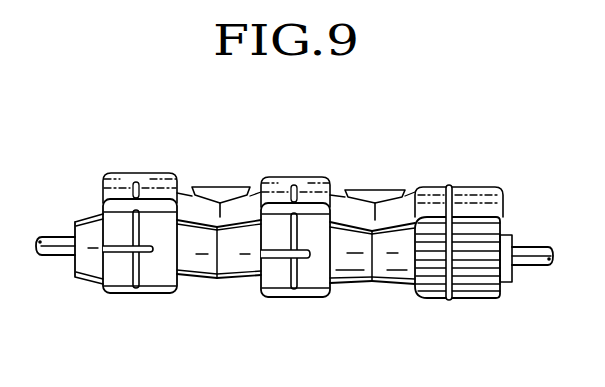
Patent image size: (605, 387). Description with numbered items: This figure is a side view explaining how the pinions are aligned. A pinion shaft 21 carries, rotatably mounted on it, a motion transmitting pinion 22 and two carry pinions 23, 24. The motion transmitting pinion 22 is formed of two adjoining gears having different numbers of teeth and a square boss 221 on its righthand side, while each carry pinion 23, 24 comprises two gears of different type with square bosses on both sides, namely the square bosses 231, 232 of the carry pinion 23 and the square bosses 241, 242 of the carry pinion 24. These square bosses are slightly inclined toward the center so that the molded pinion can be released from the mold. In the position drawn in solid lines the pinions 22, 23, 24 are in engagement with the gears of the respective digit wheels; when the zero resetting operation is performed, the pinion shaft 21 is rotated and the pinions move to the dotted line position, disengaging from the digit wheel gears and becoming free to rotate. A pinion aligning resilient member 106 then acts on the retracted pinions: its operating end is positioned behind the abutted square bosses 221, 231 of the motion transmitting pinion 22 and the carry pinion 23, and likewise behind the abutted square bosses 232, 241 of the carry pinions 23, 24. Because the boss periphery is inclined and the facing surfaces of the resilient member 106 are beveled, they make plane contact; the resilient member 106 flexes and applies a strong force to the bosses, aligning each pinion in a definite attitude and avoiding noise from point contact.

The pinion shaft 21 is at (539, 249).
The motion transmitting pinion 22 is at (468, 300).
The square boss 221 is at (399, 284).
The carry pinion 23 is at (295, 298).
The square boss 231 is at (352, 284).
The square boss 232 is at (237, 282).
The carry pinion 24 is at (131, 294).
The square boss 241 is at (195, 280).
The square boss 242 is at (86, 278).
The pinion aligning resilient member 106 is at (218, 187).